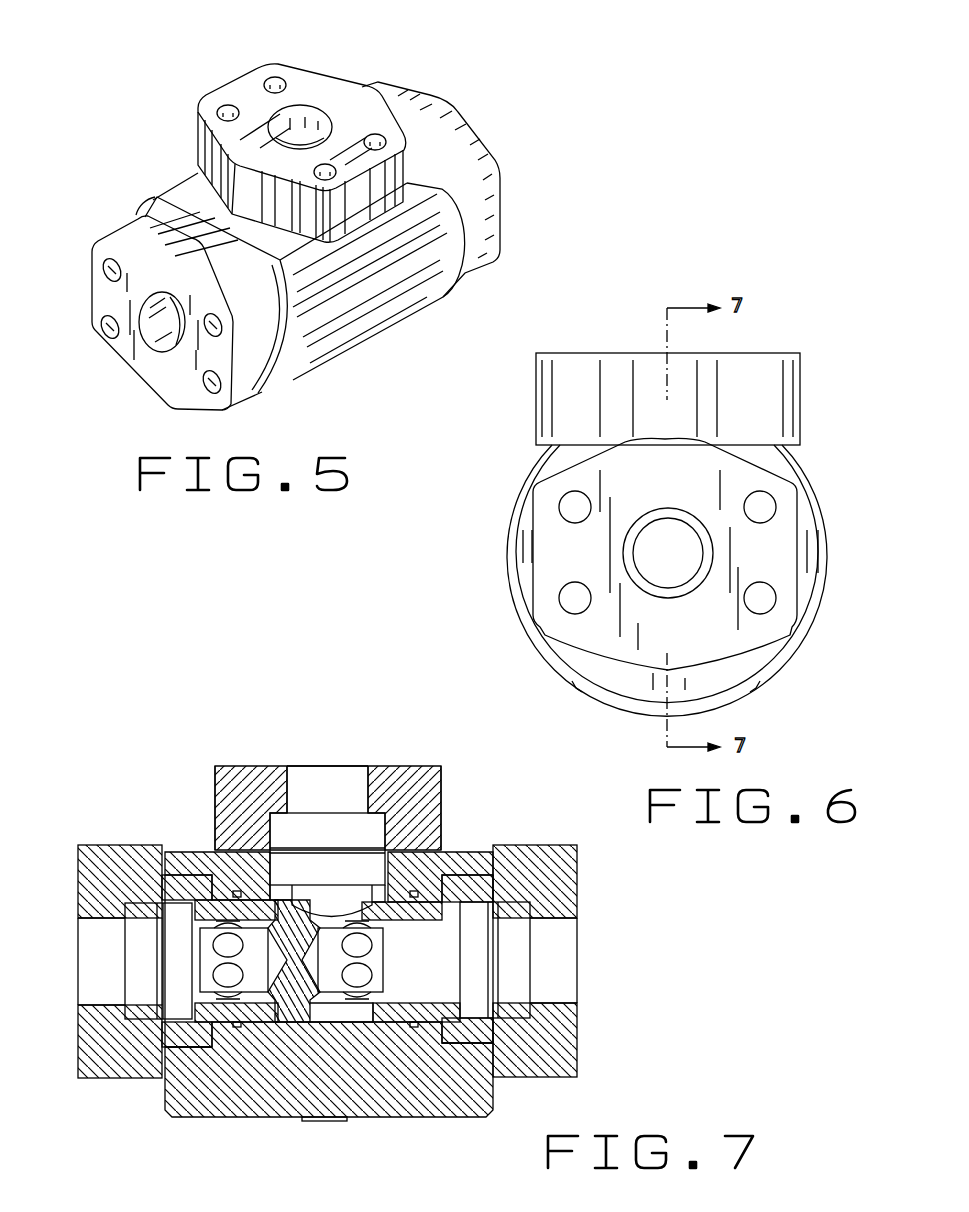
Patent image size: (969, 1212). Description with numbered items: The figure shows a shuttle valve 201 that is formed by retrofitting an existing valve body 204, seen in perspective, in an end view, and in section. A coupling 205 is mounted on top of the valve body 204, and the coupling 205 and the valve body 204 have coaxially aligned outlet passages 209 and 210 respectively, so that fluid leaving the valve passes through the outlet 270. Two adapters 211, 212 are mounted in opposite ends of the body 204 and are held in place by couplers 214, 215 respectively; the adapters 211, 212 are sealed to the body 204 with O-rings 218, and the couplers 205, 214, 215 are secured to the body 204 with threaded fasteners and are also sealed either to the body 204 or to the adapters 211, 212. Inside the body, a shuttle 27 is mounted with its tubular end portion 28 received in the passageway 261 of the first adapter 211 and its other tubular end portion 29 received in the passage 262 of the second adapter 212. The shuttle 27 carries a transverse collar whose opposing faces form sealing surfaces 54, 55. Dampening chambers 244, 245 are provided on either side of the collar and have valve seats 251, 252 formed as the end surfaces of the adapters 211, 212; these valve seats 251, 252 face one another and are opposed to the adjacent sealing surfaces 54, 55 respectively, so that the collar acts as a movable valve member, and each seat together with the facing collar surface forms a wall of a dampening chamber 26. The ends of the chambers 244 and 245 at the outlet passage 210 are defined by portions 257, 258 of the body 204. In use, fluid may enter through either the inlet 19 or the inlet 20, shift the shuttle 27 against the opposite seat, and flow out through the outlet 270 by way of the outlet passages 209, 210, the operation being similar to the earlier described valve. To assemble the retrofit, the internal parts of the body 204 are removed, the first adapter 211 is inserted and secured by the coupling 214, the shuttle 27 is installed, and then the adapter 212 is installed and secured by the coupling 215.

In FIG. 5, the valve 201 is at (223, 60).
In FIG. 7, the valve 201 is at (208, 714).
In FIG. 5, the coupling 205 is at (336, 78).
In FIG. 6, the coupling 205 is at (743, 353).
In FIG. 7, the coupling 205 is at (387, 767).
In FIG. 5, the coupler 215 is at (487, 150).
In FIG. 7, the coupler 215 is at (578, 887).
In FIG. 5, the coupler 214 is at (125, 373).
In FIG. 6, the coupler 214 is at (785, 556).
In FIG. 7, the coupler 214 is at (78, 868).
In FIG. 5, the valve body 204 is at (372, 333).
In FIG. 6, the valve body 204 is at (530, 482).
In FIG. 7, the valve body 204 is at (483, 845).
In FIG. 6, the inlet 19 is at (690, 548).
In FIG. 7, the inlet 19 is at (100, 925).
In FIG. 7, the inlet 20 is at (578, 930).
In FIG. 7, the tubular end portion 28 is at (200, 923).
In FIG. 7, the tubular end portion 29 is at (400, 946).
In FIG. 7, the shuttle 27 is at (400, 972).
In FIG. 7, the passageway 261 is at (190, 980).
In FIG. 7, the passage 262 is at (470, 990).
In FIG. 7, the adapter 211 is at (160, 1048).
In FIG. 7, the adapter 212 is at (465, 1040).
In FIG. 7, the outlet passage 209 is at (368, 795).
In FIG. 7, the outlet 270 is at (318, 766).
In FIG. 7, the O-rings 218 is at (215, 835).
In FIG. 7, the outlet passage 210 is at (345, 893).
In FIG. 7, the dampening chamber 244 is at (297, 897).
In FIG. 7, the portion 258 is at (392, 855).
In FIG. 7, the portion 257 is at (236, 891).
In FIG. 7, the dampening chamber 245 is at (416, 891).
In FIG. 7, the sealing surface 54 is at (262, 1008).
In FIG. 7, the valve seat 251 is at (292, 1012).
In FIG. 7, the sealing surface 55 is at (330, 1020).
In FIG. 7, the valve seat 252 is at (376, 1010).
In FIG. 7, the dampening chamber 26 is at (350, 1002).